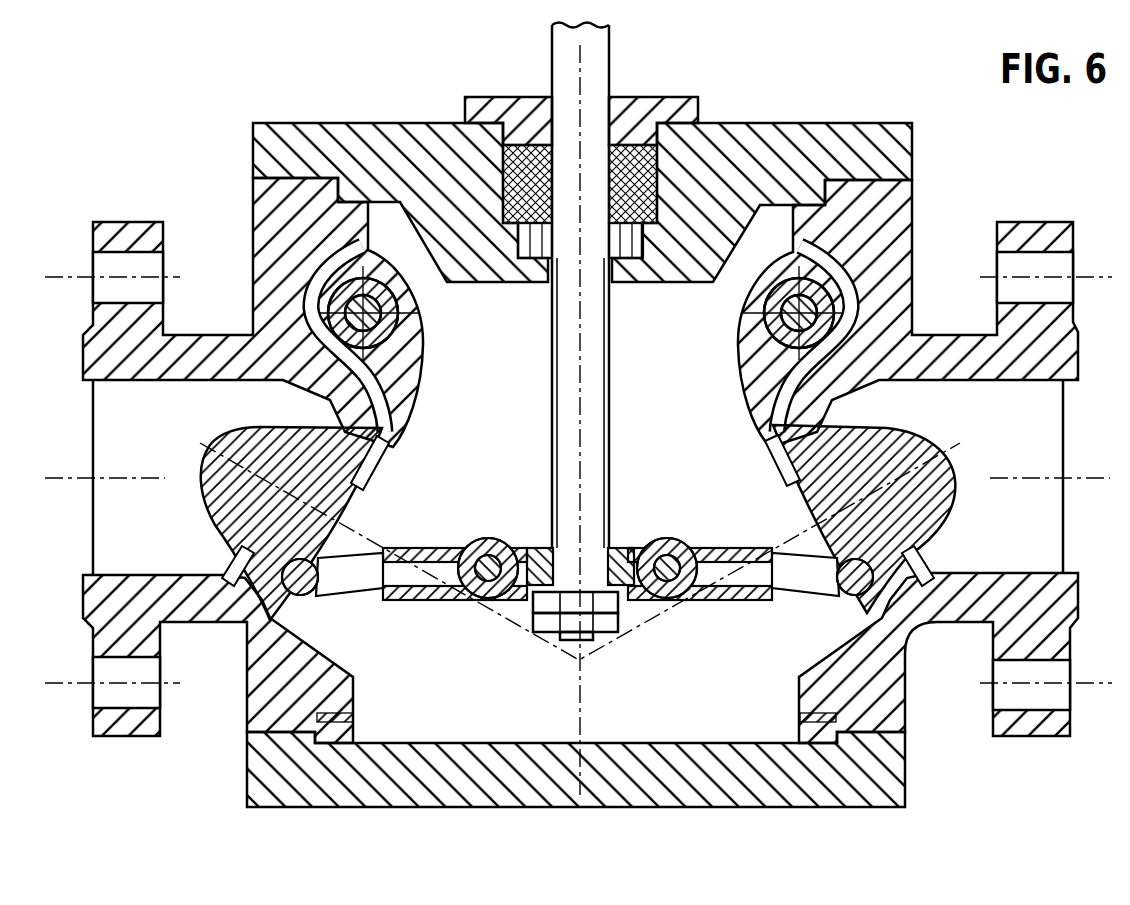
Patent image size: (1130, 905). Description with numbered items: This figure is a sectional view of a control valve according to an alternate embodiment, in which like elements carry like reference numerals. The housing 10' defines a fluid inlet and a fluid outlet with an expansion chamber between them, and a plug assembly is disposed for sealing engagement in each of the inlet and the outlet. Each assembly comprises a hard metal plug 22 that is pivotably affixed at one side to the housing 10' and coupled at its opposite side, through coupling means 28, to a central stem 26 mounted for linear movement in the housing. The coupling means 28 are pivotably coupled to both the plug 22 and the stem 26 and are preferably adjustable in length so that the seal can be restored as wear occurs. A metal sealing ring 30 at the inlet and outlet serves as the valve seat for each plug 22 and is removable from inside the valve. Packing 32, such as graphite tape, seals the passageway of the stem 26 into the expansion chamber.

The housing 10' is at (578, 452).
The hard metal plug 22 is at (204, 465).
The stem 26 is at (593, 352).
The coupling means 28 is at (456, 546).
The metal sealing ring 30 is at (274, 612).
The packing 32 is at (655, 185).